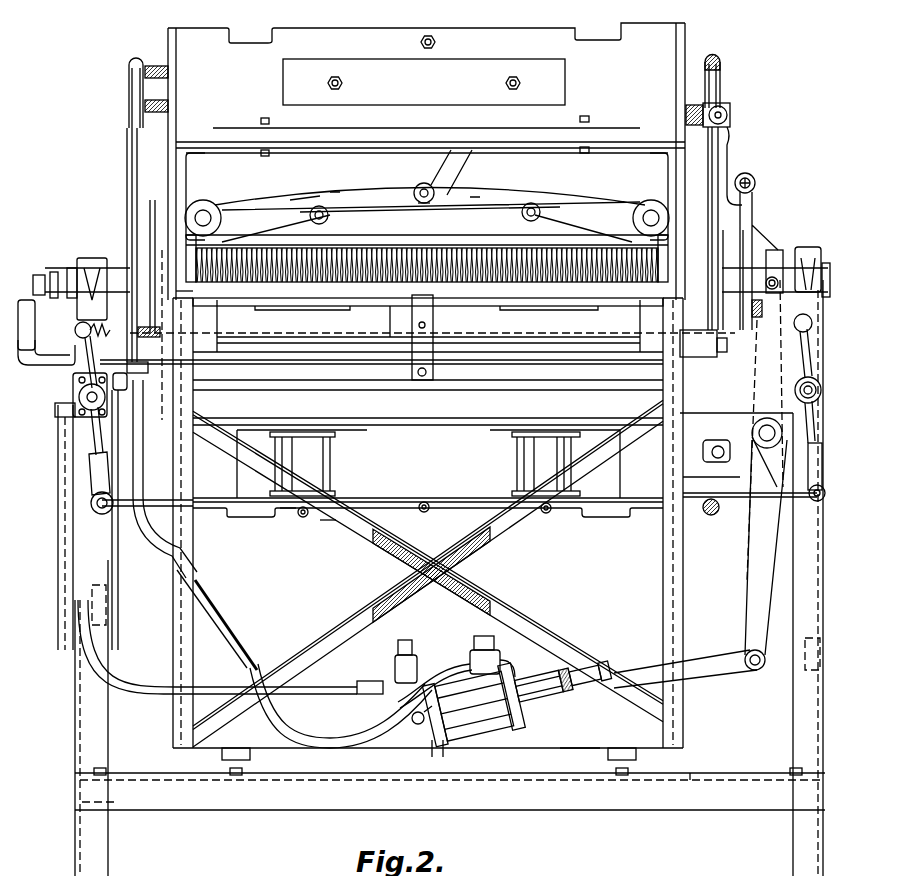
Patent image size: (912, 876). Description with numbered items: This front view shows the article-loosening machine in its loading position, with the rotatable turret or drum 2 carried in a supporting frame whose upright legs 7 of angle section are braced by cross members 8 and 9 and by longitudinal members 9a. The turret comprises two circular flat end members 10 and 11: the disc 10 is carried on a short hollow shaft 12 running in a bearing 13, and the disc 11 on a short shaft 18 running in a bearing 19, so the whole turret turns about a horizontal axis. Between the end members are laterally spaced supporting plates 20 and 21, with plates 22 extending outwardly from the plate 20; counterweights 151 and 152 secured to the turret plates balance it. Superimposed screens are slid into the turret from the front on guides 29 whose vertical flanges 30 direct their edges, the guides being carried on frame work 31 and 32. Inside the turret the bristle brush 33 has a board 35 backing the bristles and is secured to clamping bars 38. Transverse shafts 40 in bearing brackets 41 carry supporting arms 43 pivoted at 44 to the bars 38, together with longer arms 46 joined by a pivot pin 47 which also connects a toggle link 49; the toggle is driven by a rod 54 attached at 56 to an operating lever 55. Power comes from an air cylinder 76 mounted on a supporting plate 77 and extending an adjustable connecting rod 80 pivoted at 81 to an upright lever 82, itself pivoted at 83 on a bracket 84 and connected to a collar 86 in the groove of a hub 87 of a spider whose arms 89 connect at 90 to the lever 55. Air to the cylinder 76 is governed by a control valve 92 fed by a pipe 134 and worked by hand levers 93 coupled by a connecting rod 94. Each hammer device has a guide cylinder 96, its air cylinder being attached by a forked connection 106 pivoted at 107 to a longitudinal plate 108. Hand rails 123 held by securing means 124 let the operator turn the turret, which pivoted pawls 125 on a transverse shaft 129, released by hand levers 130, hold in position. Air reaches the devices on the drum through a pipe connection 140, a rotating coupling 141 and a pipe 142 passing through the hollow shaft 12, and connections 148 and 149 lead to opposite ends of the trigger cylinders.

The rotatable turret or drum 2 is at (690, 44).
The upright supporting legs 7 is at (92, 740).
The cross members 8 is at (107, 520).
The cross members 9 is at (450, 781).
The longitudinal members 9a is at (540, 812).
The end member 10 is at (178, 132).
The end member 11 is at (672, 72).
The short hollow shaft 12 is at (110, 268).
The bearing 13 is at (104, 240).
The short shaft 18 is at (792, 245).
The bearing 19 is at (808, 247).
The supporting plate 20 is at (303, 196).
The supporting plate 21 is at (416, 430).
The laterally spaced plates 22 is at (348, 33).
The guides 29 is at (196, 306).
The vertical flanges 30 is at (275, 300).
The frame work 31 is at (505, 540).
The frame work 32 is at (570, 758).
The bristle brush 33 is at (330, 285).
The board 35 is at (448, 235).
The flat bars or clamps 38 is at (355, 205).
The transverse shafts 40 is at (206, 214).
The bearing brackets 41 is at (190, 192).
The supporting arms 43 is at (258, 206).
The pivotal connections 44 is at (325, 221).
The longer arms 46 is at (328, 190).
The pivot pin 47 is at (418, 203).
The toggle link 49 is at (435, 162).
The rod 54 is at (686, 118).
The operating lever 55 is at (732, 140).
The pivotal connection 56 is at (728, 114).
The cylinder 76 is at (485, 715).
The supporting plate 77 is at (692, 778).
The adjustable connecting rod 80 is at (634, 673).
The pivotal connection 81 is at (748, 670).
The upright lever 82 is at (755, 580).
The pivot 83 is at (760, 426).
The bracket 84 is at (772, 480).
The collar 86 is at (776, 250).
The hub 87 is at (755, 322).
The oppositely extending arms 89 is at (758, 226).
The pivotal connection 90 is at (752, 186).
The control valve 92 is at (80, 402).
The hand-operated levers 93 is at (86, 370).
The connecting rod 94 is at (638, 512).
The guide cylinder 96 is at (337, 462).
The forked connection 106 is at (288, 512).
The pivot 107 is at (302, 518).
The longitudinally extending plate 108 is at (328, 522).
The circular hand rail 123 is at (128, 117).
The securing means 124 is at (170, 102).
The pivoted pawls 125 is at (176, 291).
The transverse shaft 129 is at (544, 343).
The hand lever 130 is at (134, 172).
The pipe 134 is at (128, 530).
The pipe connection 140 is at (28, 330).
The coupling 141 is at (46, 275).
The pipe 142 is at (64, 272).
The connection 148 is at (230, 636).
The connection 149 is at (148, 704).
The counterweight 151 is at (482, 135).
The counterweight 152 is at (466, 62).